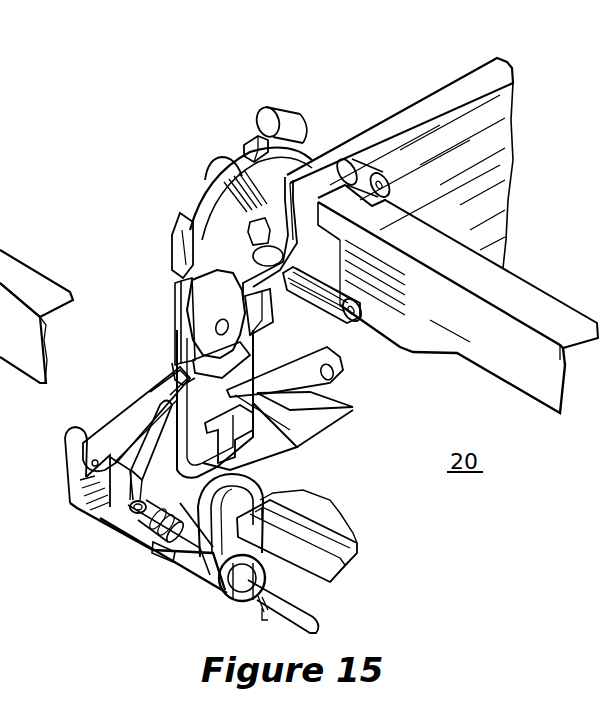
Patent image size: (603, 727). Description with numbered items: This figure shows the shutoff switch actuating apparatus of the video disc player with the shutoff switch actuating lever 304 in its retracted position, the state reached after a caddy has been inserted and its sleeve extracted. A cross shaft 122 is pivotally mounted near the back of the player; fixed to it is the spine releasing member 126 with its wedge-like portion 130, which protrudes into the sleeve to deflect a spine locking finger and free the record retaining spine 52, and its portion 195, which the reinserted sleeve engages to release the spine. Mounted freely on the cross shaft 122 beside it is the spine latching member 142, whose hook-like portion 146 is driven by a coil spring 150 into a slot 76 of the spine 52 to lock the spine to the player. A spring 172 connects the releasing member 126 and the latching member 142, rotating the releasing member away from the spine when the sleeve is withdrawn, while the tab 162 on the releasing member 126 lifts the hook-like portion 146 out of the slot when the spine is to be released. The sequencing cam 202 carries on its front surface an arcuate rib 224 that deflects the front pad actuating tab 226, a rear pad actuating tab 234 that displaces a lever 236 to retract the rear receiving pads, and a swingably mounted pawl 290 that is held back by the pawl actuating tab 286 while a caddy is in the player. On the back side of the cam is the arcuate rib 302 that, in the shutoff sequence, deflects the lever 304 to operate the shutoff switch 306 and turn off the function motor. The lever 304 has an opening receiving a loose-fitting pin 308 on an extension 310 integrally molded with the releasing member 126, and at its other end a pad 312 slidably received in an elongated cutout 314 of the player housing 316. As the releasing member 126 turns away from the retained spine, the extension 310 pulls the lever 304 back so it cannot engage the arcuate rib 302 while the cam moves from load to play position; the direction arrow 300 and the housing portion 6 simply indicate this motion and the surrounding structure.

The beam 6 is at (36, 277).
The record retaining spine 52 is at (345, 525).
The cutout 76 is at (267, 520).
The cross shaft 122 is at (305, 612).
The spine releasing member 126 is at (100, 512).
The wedge-like portion 130 is at (160, 440).
The spine latching member 142 is at (197, 570).
The hook-like portion 146 is at (258, 487).
The coil spring 150 is at (266, 583).
The tab 162 is at (163, 550).
The spring 172 is at (143, 537).
The portion 195 is at (142, 427).
The sequencing cam 202 is at (240, 158).
The arcuate rib 224 is at (255, 138).
The front pad actuating tab 226 is at (277, 118).
The rear pad actuating tab 234 is at (345, 418).
The lever 236 is at (200, 497).
The pawl actuating tab 286 is at (335, 152).
The pawl 290 is at (186, 230).
The direction arrow 300 is at (60, 443).
The arcuate rib 302 is at (458, 299).
The shutoff switch actuating lever 304 is at (170, 375).
The shutoff switch 306 is at (200, 303).
The pin 308 is at (75, 505).
The extension 310 is at (65, 468).
The pad 312 is at (250, 361).
The elongated cutout 314 is at (272, 322).
The player housing 316 is at (505, 195).